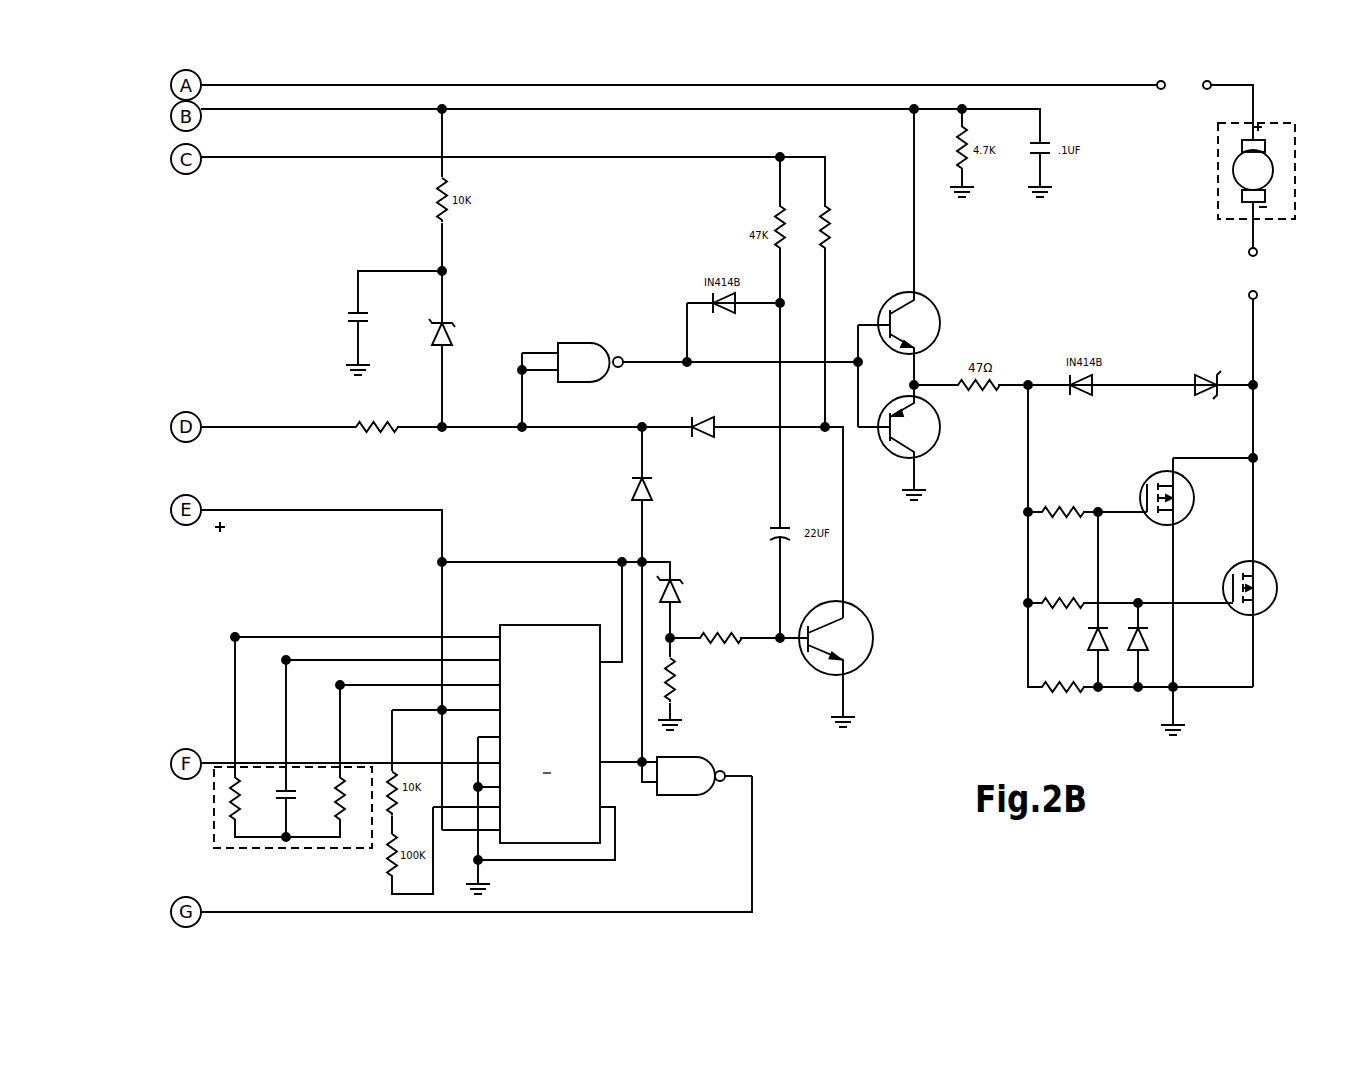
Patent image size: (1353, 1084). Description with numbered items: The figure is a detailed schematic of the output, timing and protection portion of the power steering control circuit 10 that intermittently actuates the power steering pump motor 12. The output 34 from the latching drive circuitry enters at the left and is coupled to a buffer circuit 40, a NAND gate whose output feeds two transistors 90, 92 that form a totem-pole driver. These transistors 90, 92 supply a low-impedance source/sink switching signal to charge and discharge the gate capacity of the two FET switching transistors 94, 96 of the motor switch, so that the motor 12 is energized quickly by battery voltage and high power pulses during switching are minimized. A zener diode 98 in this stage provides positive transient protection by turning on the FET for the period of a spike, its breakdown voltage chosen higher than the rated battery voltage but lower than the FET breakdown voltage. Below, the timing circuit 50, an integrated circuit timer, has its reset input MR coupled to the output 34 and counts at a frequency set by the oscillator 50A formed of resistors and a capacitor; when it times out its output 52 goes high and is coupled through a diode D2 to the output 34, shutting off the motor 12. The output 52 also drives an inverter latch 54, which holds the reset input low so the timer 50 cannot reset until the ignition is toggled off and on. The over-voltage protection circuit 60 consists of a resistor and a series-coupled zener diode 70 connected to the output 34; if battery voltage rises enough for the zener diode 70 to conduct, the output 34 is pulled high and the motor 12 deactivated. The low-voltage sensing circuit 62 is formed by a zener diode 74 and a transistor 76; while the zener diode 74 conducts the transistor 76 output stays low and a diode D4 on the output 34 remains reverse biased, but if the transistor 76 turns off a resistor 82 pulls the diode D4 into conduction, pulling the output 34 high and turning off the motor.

The power steering control circuit 10 is at (1144, 560).
The power steering pump motor 12 is at (1218, 157).
The output 34 is at (313, 430).
The buffer circuit 40 is at (578, 356).
The timing circuit 50 is at (558, 635).
The oscillator 50A is at (235, 850).
The output 52 is at (618, 765).
The latch 54 is at (693, 765).
The over-voltage protection circuit 60 is at (422, 385).
The low-voltage sensing circuit 62 is at (799, 645).
The zener diode 70 is at (454, 321).
The zener diode 74 is at (683, 593).
The transistor 76 is at (866, 633).
The resistor 82 is at (828, 227).
The transistor 90 is at (933, 307).
The transistor 92 is at (937, 433).
The FET switching transistor 94 is at (1188, 494).
The FET switching transistor 96 is at (1270, 600).
The zener diode 98 is at (1212, 389).
The diode D2 is at (651, 489).
The diode D4 is at (701, 439).